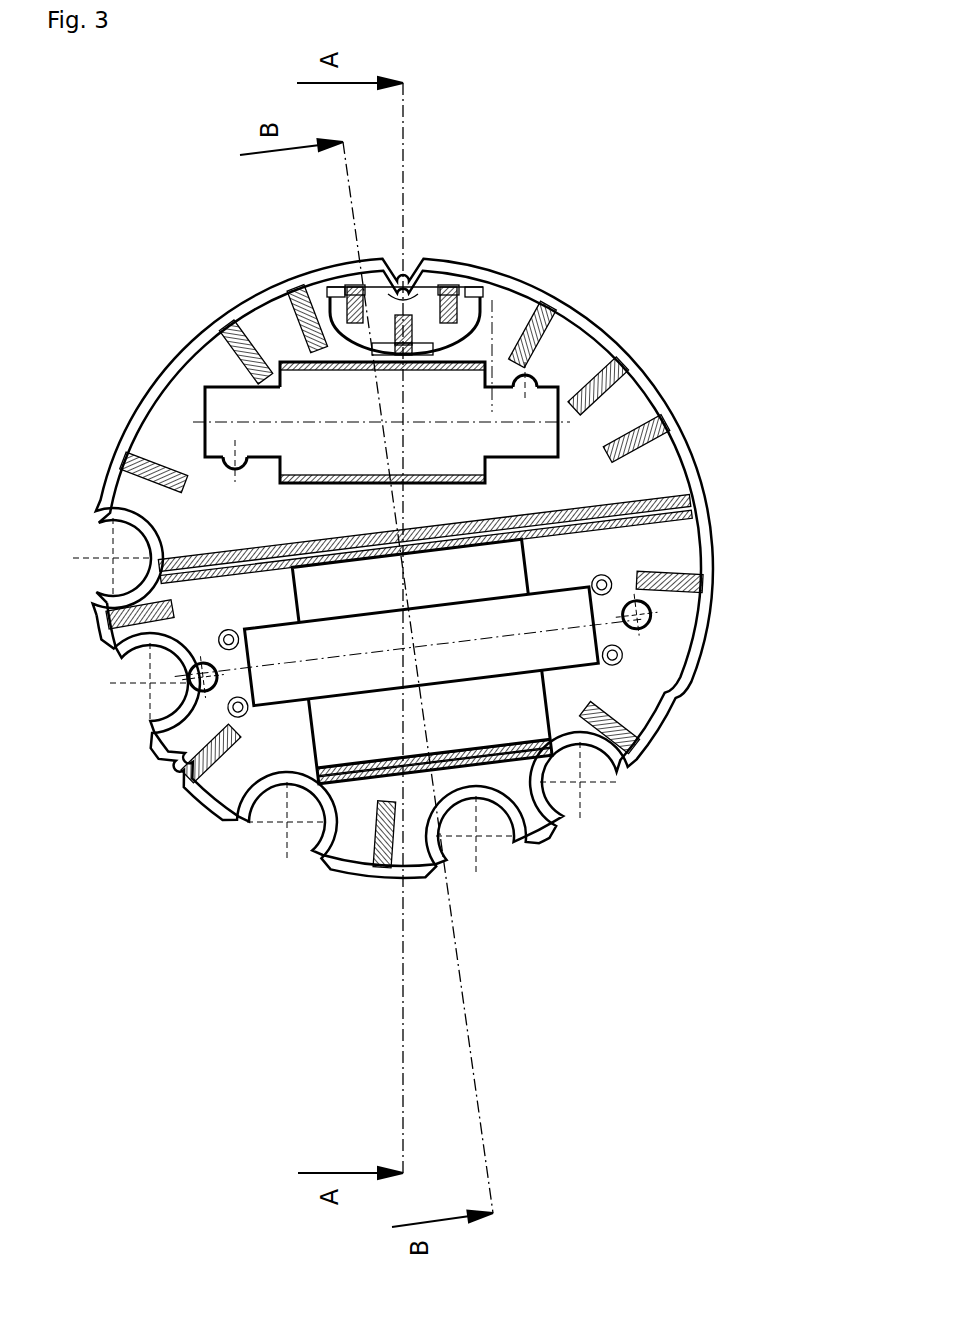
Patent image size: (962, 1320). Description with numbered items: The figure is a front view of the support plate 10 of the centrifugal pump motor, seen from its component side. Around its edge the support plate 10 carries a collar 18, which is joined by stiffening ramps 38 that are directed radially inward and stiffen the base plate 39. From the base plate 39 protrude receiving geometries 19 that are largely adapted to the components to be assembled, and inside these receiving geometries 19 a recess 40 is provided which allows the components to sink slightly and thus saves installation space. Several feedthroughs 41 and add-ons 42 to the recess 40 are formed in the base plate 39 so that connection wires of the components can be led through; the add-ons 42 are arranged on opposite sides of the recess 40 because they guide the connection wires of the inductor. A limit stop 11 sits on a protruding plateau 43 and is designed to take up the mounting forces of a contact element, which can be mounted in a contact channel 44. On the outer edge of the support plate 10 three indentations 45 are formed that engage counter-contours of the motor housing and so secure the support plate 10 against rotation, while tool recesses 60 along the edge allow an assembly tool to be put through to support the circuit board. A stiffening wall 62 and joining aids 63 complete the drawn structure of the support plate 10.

The support plate 10 is at (664, 272).
The limit stop 11 is at (402, 292).
The collar 18 is at (700, 440).
The receiving geometry 19 is at (305, 360).
The stiffening ramp 38 is at (598, 402).
The base plate 39 is at (235, 520).
The recess 40 is at (492, 405).
The feedthrough 41 is at (652, 612).
The add-on 42 is at (540, 375).
The plateau 43 is at (330, 330).
The contact channel 44 is at (355, 290).
The indentation 45 is at (412, 272).
The tool recess 60 is at (135, 550).
The stiffening wall 62 is at (215, 557).
The joining aid 63 is at (613, 580).